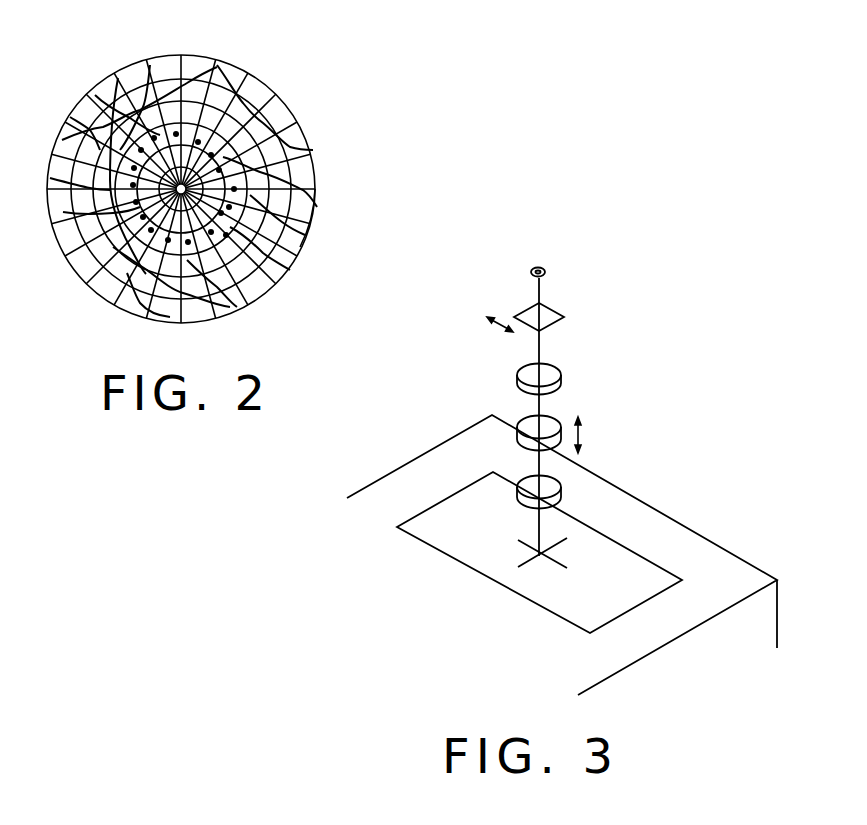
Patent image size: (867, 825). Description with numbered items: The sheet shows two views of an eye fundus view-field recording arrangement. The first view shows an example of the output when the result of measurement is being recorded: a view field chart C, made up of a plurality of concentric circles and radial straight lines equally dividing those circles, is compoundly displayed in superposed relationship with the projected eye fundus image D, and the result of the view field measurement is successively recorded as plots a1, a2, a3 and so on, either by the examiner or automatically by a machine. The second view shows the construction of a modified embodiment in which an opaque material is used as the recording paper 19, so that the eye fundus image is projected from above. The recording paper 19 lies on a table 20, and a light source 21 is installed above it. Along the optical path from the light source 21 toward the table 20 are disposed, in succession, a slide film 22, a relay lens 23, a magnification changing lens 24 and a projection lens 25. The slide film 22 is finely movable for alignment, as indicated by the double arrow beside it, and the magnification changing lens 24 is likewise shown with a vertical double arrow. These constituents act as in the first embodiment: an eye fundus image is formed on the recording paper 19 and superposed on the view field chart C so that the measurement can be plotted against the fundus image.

In FIG. 2, the view field chart C is at (251, 76).
In FIG. 2, the plot a1 is at (256, 103).
In FIG. 2, the plot a2 is at (314, 170).
In FIG. 2, the plot a3 is at (308, 210).
In FIG. 2, the projected eye fundus image D is at (58, 212).
In FIG. 3, the recording paper 19 is at (537, 593).
In FIG. 3, the table 20 is at (723, 650).
In FIG. 3, the light source 21 is at (547, 273).
In FIG. 3, the slide film 22 is at (566, 318).
In FIG. 3, the relay lens 23 is at (561, 378).
In FIG. 3, the magnification changing lens 24 is at (559, 423).
In FIG. 3, the projection lens 25 is at (559, 488).